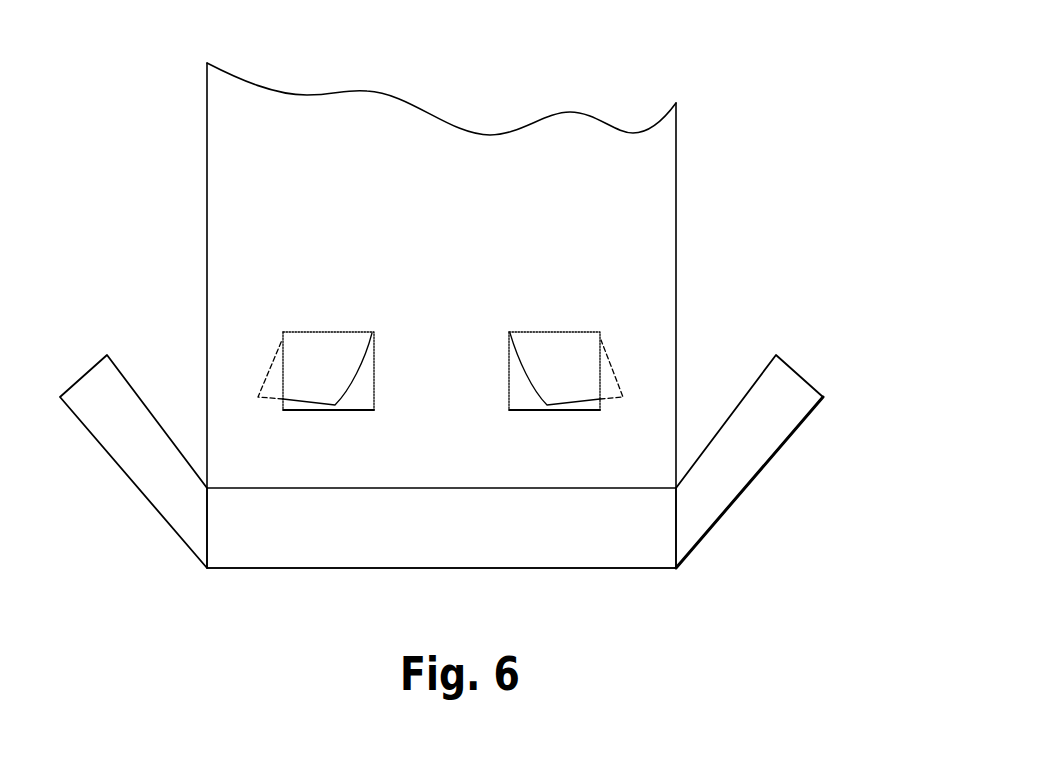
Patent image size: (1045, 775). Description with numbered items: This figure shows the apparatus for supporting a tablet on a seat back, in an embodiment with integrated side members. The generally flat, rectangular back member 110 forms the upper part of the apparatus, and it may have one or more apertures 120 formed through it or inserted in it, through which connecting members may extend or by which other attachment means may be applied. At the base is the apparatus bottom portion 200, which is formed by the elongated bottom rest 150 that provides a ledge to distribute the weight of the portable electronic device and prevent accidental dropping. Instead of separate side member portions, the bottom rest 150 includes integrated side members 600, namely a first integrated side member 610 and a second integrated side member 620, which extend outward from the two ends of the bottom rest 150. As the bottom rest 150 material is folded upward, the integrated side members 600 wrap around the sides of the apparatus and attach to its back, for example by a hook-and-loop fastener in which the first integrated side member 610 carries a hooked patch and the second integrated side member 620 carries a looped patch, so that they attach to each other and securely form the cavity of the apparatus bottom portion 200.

The apparatus bottom portion 200 is at (623, 65).
The back member 110 is at (455, 197).
The bottom rest member 150 is at (454, 540).
The integrated side members 600 is at (560, 375).
The first integrated side member 610 is at (143, 437).
The second integrated side member 620 is at (767, 437).
The apertures 120 is at (528, 398).